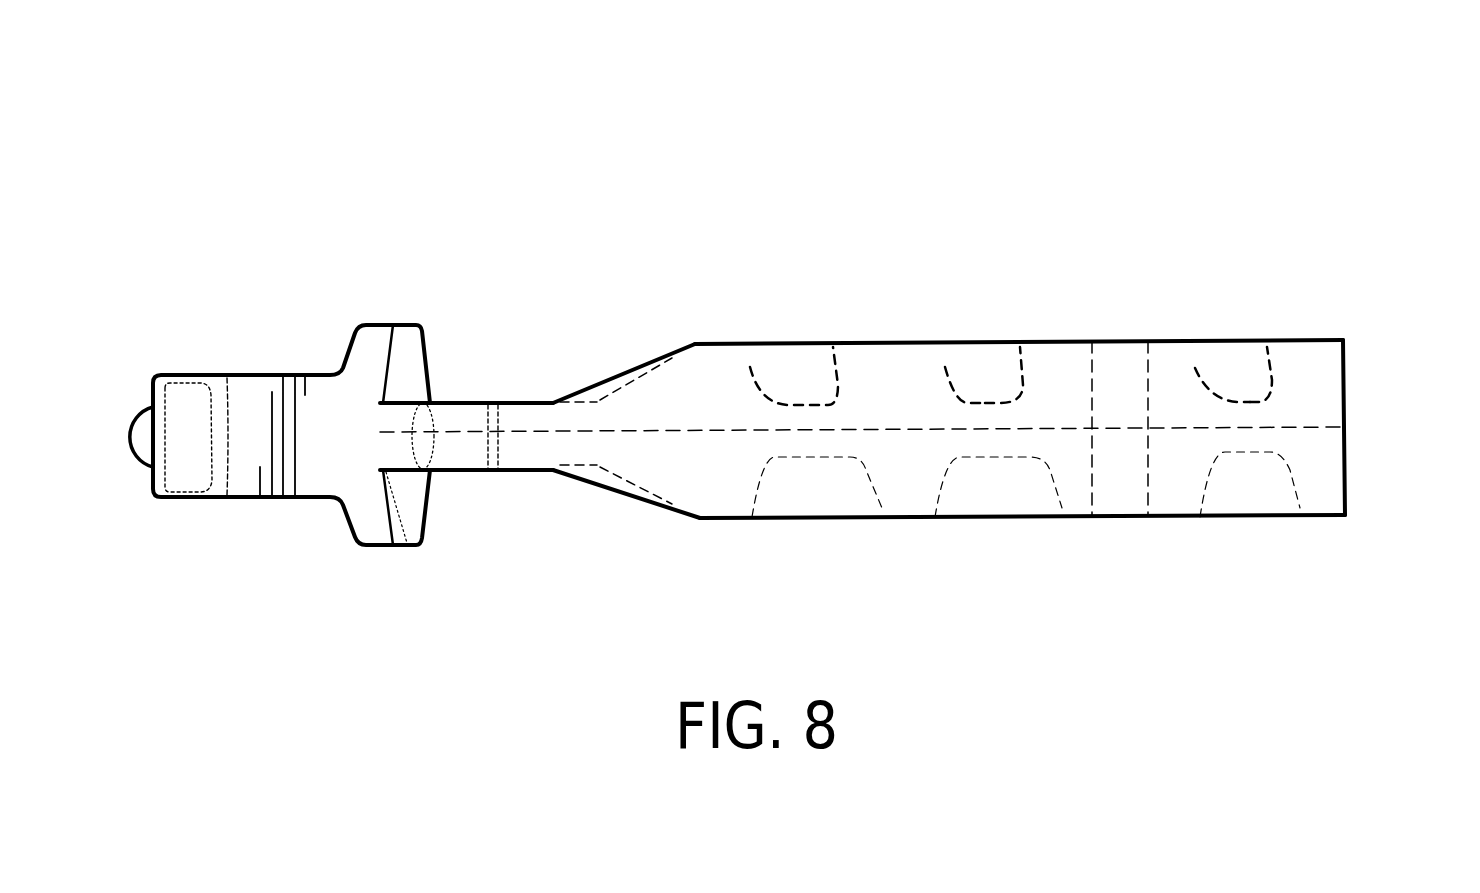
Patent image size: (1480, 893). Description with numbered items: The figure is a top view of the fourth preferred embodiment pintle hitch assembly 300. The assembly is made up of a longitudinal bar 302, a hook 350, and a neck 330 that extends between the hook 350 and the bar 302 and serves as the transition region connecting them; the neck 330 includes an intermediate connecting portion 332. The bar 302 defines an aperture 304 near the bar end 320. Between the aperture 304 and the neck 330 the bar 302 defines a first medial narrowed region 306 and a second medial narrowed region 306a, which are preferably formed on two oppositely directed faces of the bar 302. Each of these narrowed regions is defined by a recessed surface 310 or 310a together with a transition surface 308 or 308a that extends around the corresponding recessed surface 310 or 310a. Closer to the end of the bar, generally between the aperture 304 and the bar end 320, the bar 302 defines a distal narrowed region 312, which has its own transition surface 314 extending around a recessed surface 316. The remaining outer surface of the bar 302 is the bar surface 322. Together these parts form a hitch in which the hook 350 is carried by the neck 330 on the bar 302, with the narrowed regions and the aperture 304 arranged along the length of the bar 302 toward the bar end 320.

The pintle hitch assembly 300 is at (1250, 152).
The longitudinal bar 302 is at (902, 507).
The aperture 304 is at (1093, 473).
The first medial narrowed region 306 is at (882, 535).
The second medial narrowed region 306a is at (1067, 535).
The transition surface 308 is at (750, 367).
The transition surface 308a is at (945, 367).
The recessed surface 310 is at (833, 347).
The recessed surface 310a is at (1020, 347).
The distal narrowed region 312 is at (1317, 530).
The transition surface 314 is at (1195, 368).
The recessed surface 316 is at (1267, 347).
The bar end 320 is at (1343, 400).
The bar surface 322 is at (1160, 340).
The neck 330 is at (660, 480).
The intermediate connecting portion 332 is at (468, 477).
The hook 350 is at (320, 477).